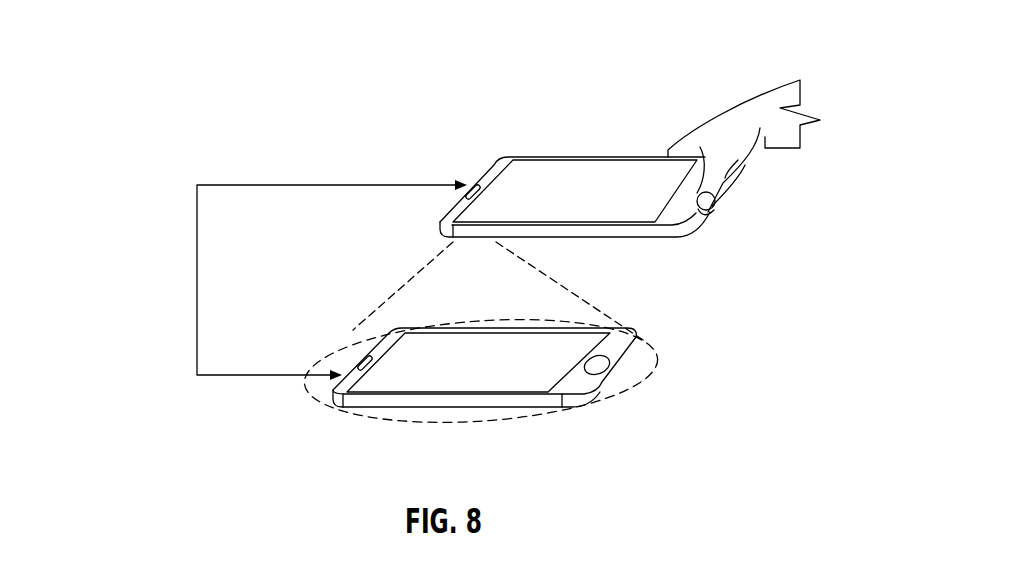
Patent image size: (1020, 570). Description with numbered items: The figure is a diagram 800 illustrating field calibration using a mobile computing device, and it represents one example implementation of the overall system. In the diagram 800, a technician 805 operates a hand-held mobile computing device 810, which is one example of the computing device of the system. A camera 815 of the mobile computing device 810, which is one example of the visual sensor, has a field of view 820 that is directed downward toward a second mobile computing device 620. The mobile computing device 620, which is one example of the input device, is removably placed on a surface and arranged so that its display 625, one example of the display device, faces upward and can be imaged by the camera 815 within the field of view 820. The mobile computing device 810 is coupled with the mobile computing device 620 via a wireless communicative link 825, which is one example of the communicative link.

The diagram 800 is at (826, 55).
The technician 805 is at (780, 82).
The mobile computing device 810 is at (586, 156).
The camera 815 is at (481, 253).
The field of view 820 is at (427, 265).
The wireless communicative link 825 is at (197, 280).
The mobile computing device 620 is at (390, 400).
The display 625 is at (575, 347).